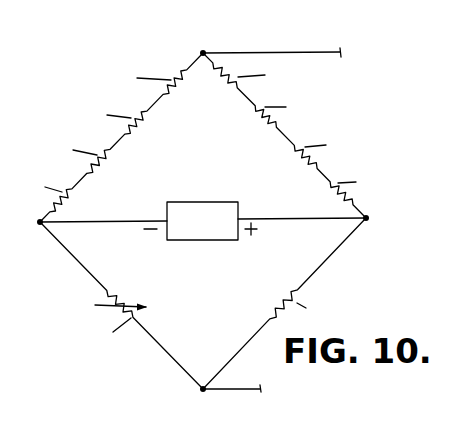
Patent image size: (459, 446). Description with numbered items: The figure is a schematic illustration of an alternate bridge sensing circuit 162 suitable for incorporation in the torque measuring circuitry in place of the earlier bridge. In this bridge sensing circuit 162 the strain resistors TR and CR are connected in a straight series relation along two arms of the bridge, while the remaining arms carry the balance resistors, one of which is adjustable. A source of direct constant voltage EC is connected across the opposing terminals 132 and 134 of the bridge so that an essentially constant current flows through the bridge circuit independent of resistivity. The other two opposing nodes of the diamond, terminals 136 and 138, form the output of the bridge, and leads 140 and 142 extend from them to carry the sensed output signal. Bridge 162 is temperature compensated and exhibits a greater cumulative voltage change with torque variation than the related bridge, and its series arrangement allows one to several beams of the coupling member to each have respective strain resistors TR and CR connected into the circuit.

The bridge terminal 132 is at (40, 222).
The bridge terminal 134 is at (366, 218).
The bridge output terminal 136 is at (203, 53).
The bridge output terminal 138 is at (203, 389).
The output lead 140 is at (310, 50).
The output lead 142 is at (238, 390).
The bridge sensing circuit 162 is at (200, 221).